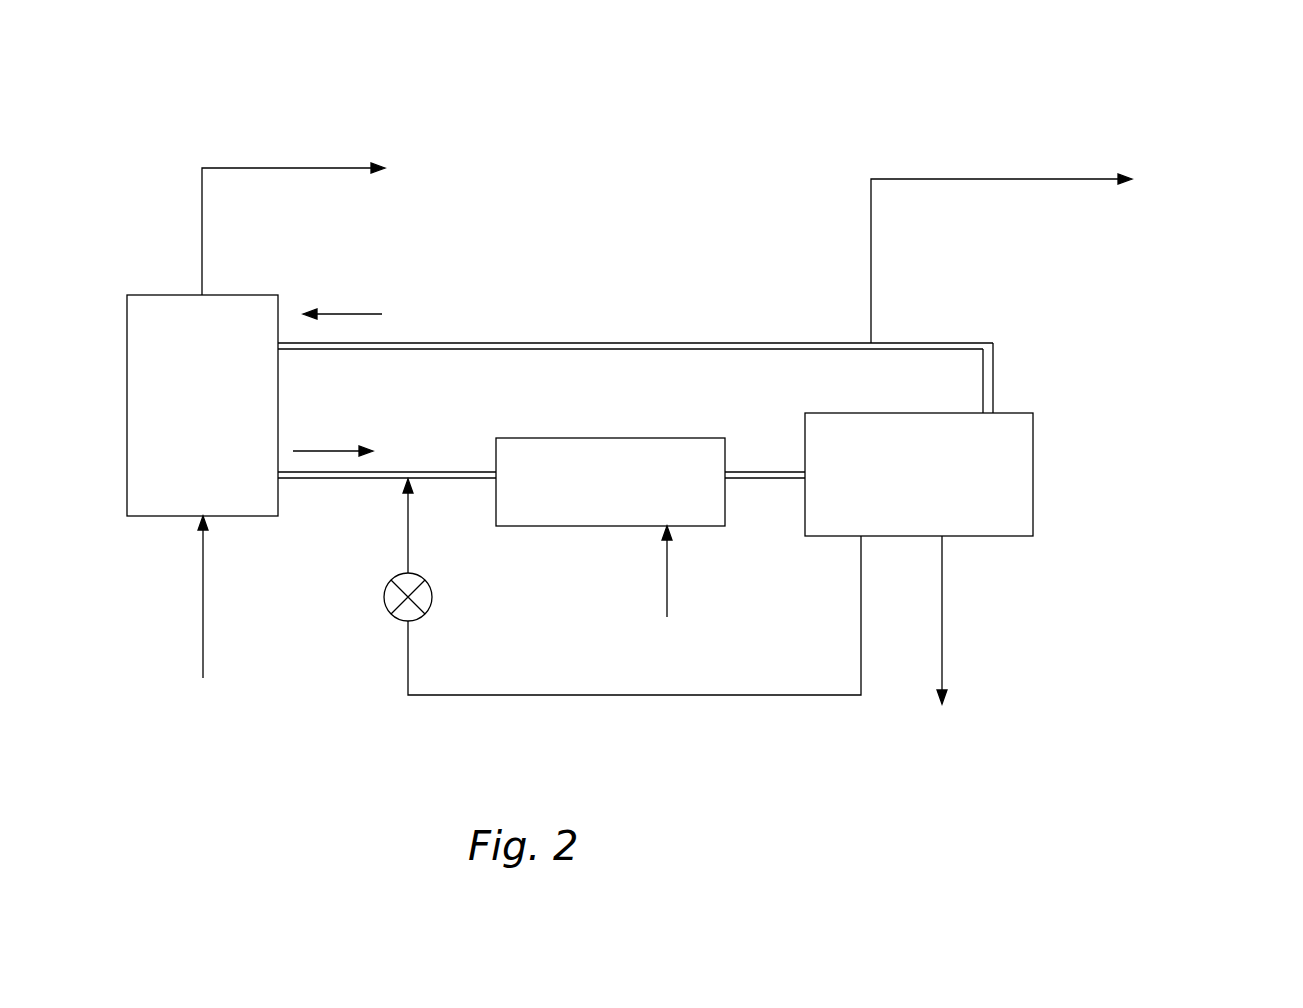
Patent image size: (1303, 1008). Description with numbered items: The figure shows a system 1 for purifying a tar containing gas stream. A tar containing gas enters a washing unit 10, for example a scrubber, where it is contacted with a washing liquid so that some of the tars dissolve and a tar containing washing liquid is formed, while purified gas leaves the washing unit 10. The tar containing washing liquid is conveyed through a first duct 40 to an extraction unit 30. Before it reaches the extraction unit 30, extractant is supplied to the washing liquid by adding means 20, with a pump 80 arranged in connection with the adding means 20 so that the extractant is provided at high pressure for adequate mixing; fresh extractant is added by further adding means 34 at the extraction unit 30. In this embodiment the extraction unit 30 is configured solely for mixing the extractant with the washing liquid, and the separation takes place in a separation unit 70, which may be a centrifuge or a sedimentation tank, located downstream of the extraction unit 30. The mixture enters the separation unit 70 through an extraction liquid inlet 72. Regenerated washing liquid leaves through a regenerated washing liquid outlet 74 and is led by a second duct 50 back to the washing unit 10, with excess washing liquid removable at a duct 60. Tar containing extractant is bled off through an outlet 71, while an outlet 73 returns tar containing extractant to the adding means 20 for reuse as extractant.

The system 1 is at (148, 197).
The washing unit 10 is at (142, 342).
The adding means 20 is at (406, 481).
The extraction unit 30 is at (522, 455).
The adding means 34 is at (672, 530).
The first duct 40 is at (432, 470).
The second duct 50 is at (668, 342).
The duct 60 is at (871, 342).
The separation unit 70 is at (877, 420).
The outlet 71 is at (946, 538).
The extraction liquid inlet 72 is at (800, 466).
The outlet 73 is at (858, 538).
The regenerated washing liquid outlet 74 is at (996, 413).
The pump 80 is at (390, 603).